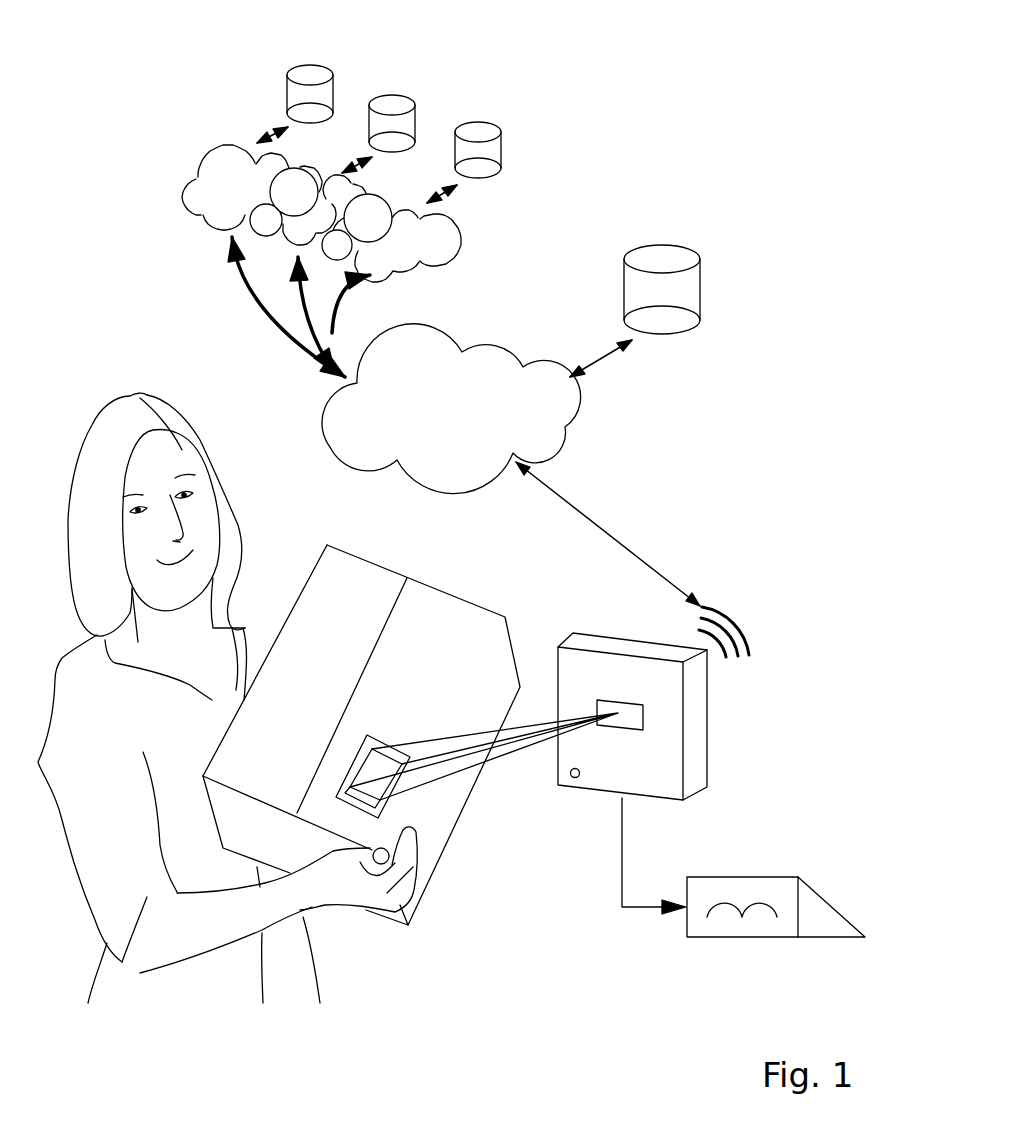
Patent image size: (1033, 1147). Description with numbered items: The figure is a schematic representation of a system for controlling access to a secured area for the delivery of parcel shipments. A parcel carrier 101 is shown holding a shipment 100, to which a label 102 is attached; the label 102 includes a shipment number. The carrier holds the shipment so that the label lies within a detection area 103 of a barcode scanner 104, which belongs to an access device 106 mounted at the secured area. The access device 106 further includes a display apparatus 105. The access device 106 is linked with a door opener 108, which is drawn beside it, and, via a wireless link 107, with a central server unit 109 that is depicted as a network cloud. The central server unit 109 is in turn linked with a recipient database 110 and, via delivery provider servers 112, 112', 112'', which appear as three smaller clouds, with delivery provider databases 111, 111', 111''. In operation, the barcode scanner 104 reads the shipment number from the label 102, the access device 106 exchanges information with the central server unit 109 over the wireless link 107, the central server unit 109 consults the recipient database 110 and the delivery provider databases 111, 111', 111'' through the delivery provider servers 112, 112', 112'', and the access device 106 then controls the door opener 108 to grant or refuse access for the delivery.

The shipment 100 is at (378, 575).
The parcel carrier 101 is at (197, 448).
The label 102 is at (377, 733).
The detection area 103 is at (350, 777).
The barcode scanner 104 is at (630, 723).
The display apparatus 105 is at (578, 777).
The access device 106 is at (598, 642).
The wireless link 107 is at (747, 656).
The door opener 108 is at (727, 927).
The central server unit 109 is at (562, 427).
The recipient database 110 is at (688, 298).
The delivery provider database 111 is at (531, 162).
The delivery provider database 111' is at (449, 93).
The delivery provider database 111'' is at (370, 64).
The delivery provider server 112 is at (442, 240).
The delivery provider server 112' is at (267, 267).
The delivery provider server 112'' is at (217, 196).